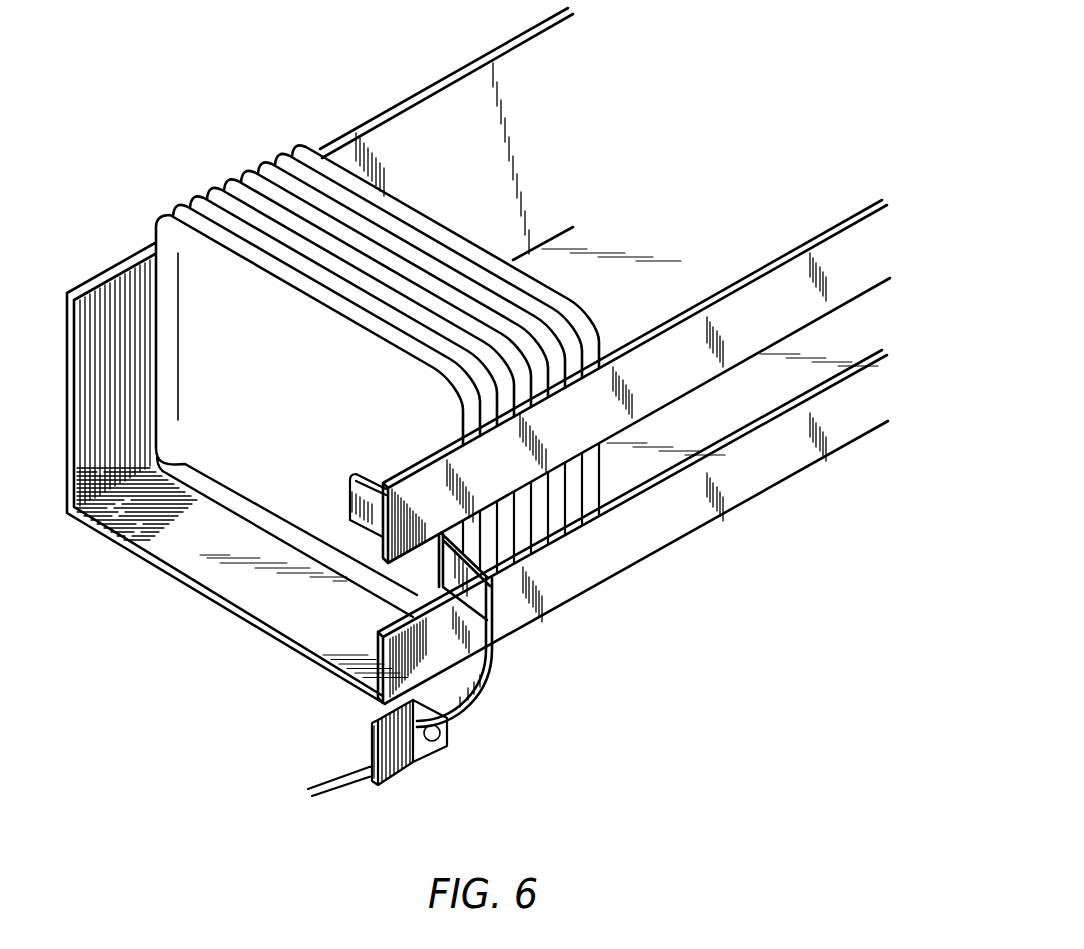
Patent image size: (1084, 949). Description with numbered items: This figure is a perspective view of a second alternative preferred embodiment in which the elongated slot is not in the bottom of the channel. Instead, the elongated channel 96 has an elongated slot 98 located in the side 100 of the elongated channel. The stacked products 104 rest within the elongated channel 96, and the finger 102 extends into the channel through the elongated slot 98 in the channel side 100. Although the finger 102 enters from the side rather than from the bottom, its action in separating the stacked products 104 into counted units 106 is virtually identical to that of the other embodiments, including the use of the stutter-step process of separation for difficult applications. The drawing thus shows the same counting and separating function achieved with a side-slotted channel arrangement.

The elongated channel 96 is at (697, 111).
The elongated slot 98 is at (858, 334).
The side 100 is at (783, 499).
The finger 102 is at (467, 707).
The stacked products 104 is at (605, 507).
The counted units 106 is at (226, 171).